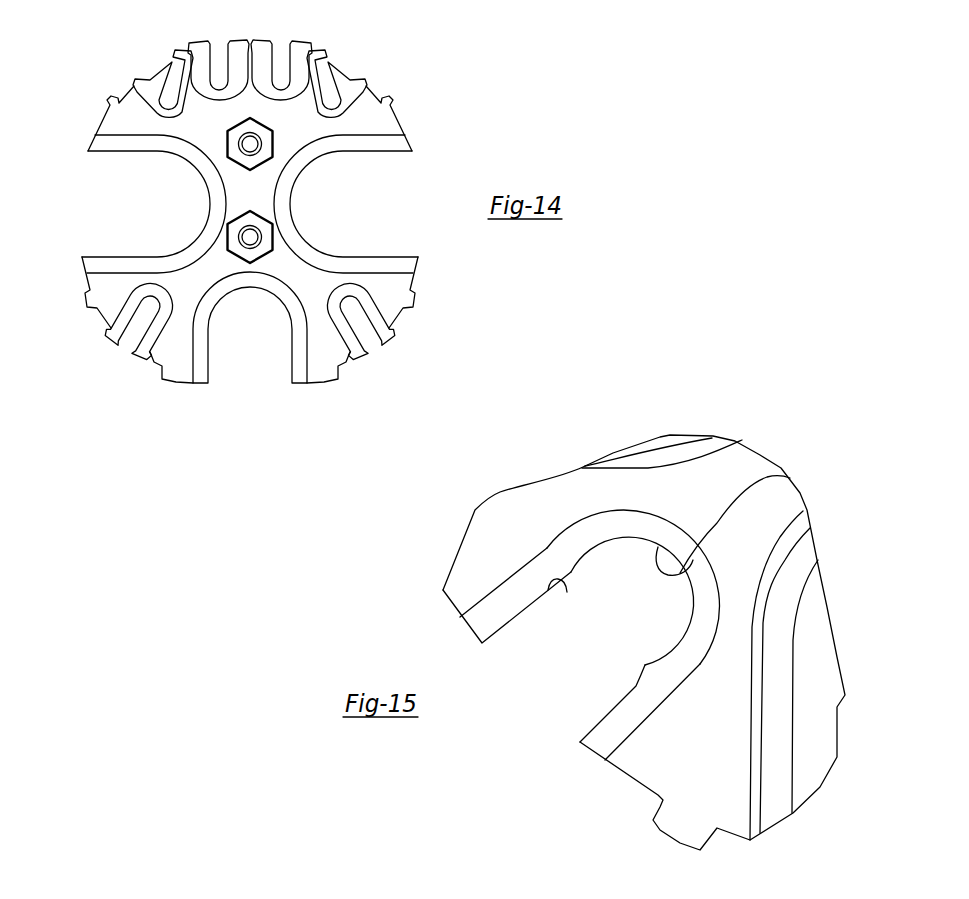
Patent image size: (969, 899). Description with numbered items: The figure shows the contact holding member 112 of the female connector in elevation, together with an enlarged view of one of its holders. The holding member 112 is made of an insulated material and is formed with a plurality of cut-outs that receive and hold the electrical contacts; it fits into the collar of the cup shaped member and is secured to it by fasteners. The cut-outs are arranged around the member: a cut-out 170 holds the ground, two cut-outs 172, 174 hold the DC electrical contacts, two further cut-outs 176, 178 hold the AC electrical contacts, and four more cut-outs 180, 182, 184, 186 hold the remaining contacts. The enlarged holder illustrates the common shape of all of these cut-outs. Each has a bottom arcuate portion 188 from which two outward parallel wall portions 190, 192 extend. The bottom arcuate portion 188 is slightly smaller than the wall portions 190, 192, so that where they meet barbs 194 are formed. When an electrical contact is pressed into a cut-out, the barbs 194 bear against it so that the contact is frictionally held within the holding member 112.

In FIG. 15, the contact holding member 112 is at (689, 434).
In FIG. 14, the cut-out 170 is at (290, 362).
In FIG. 14, the cut-out 172 is at (100, 256).
In FIG. 14, the cut-out 174 is at (388, 257).
In FIG. 14, the cut-out 176 is at (132, 332).
In FIG. 14, the cut-out 178 is at (380, 336).
In FIG. 14, the cut-out 180 is at (150, 76).
In FIG. 14, the cut-out 182 is at (207, 53).
In FIG. 14, the cut-out 184 is at (290, 57).
In FIG. 14, the cut-out 186 is at (335, 78).
In FIG. 15, the bottom arcuate portion 188 is at (792, 479).
In FIG. 15, the outward parallel wall portion 190 is at (523, 606).
In FIG. 15, the outward parallel wall portion 192 is at (613, 707).
In FIG. 15, the barbs 194 is at (564, 584).